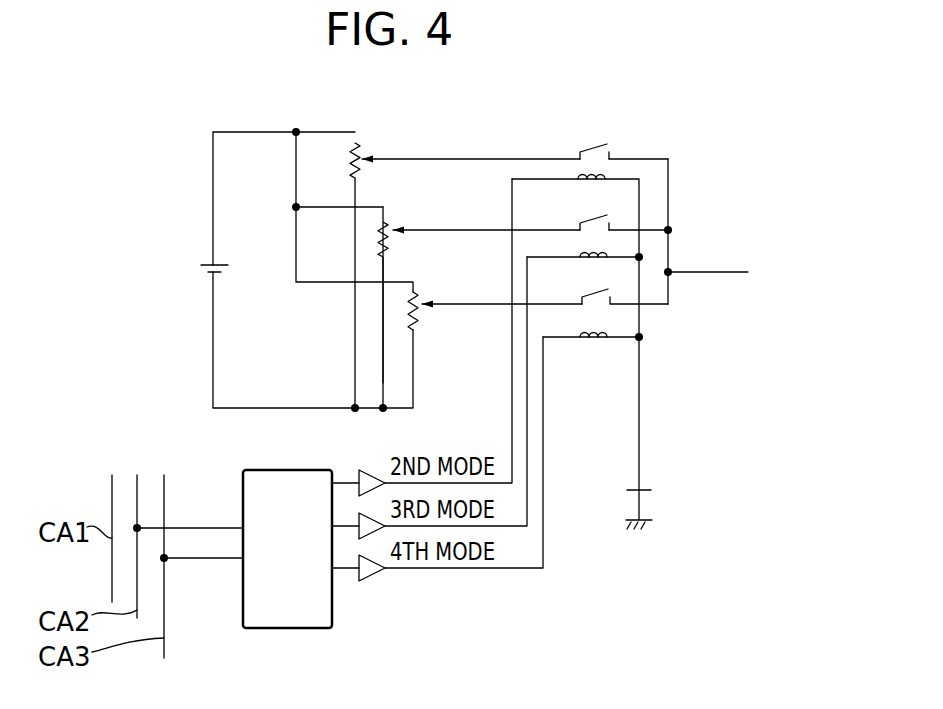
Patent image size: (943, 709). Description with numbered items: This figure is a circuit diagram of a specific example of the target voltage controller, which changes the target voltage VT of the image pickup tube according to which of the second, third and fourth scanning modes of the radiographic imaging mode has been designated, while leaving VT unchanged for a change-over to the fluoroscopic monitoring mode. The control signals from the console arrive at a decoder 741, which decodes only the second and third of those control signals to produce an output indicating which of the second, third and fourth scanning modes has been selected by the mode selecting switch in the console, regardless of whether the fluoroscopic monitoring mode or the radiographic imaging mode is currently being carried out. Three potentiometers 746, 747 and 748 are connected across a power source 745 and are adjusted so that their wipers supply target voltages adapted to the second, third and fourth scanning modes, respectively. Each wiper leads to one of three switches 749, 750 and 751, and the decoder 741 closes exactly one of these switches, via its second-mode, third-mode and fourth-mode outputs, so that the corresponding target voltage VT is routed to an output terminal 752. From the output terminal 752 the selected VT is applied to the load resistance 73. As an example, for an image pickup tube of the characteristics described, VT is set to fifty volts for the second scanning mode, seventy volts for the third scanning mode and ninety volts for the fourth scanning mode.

The decoder 741 is at (308, 470).
The power source 745 is at (206, 265).
The potentiometer 746 is at (356, 150).
The potentiometer 747 is at (394, 228).
The potentiometer 748 is at (420, 300).
The switch 749 is at (600, 144).
The switch 750 is at (598, 216).
The switch 751 is at (602, 290).
The output terminal 752 is at (712, 274).
The load resistance 73 is at (828, 293).